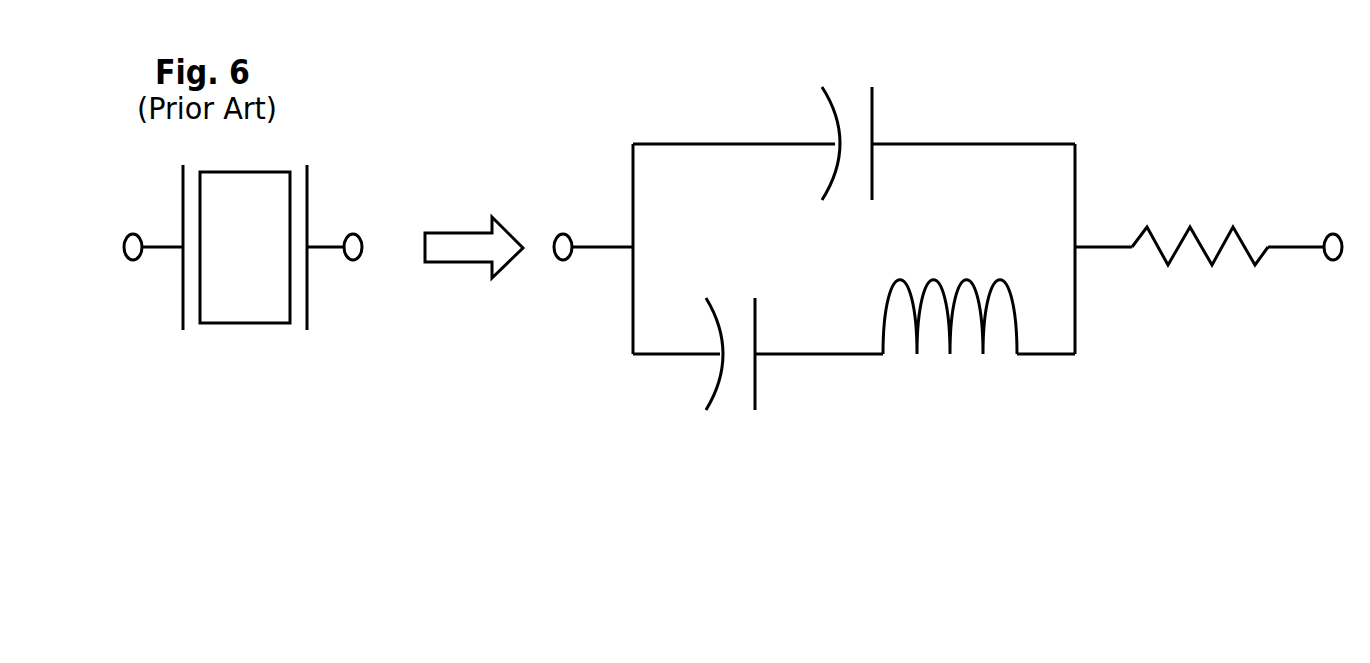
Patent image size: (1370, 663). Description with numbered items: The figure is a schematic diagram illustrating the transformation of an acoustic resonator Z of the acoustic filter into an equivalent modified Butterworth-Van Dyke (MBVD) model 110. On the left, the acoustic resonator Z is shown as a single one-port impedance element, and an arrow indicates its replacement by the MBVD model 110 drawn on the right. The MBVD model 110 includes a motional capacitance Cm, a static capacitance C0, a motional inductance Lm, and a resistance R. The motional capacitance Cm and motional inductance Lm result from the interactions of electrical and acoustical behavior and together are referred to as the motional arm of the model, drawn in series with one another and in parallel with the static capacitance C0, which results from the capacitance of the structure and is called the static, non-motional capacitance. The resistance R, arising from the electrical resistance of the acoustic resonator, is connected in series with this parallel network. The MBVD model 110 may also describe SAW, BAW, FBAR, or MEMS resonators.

The modified Butterworth-Van Dyke (MBVD) model 110 is at (650, 93).
The acoustic resonator Z is at (243, 247).
The static capacitance C0 is at (844, 100).
The motional capacitance Cm is at (734, 407).
The motional inductance Lm is at (950, 378).
The resistance R is at (1200, 198).